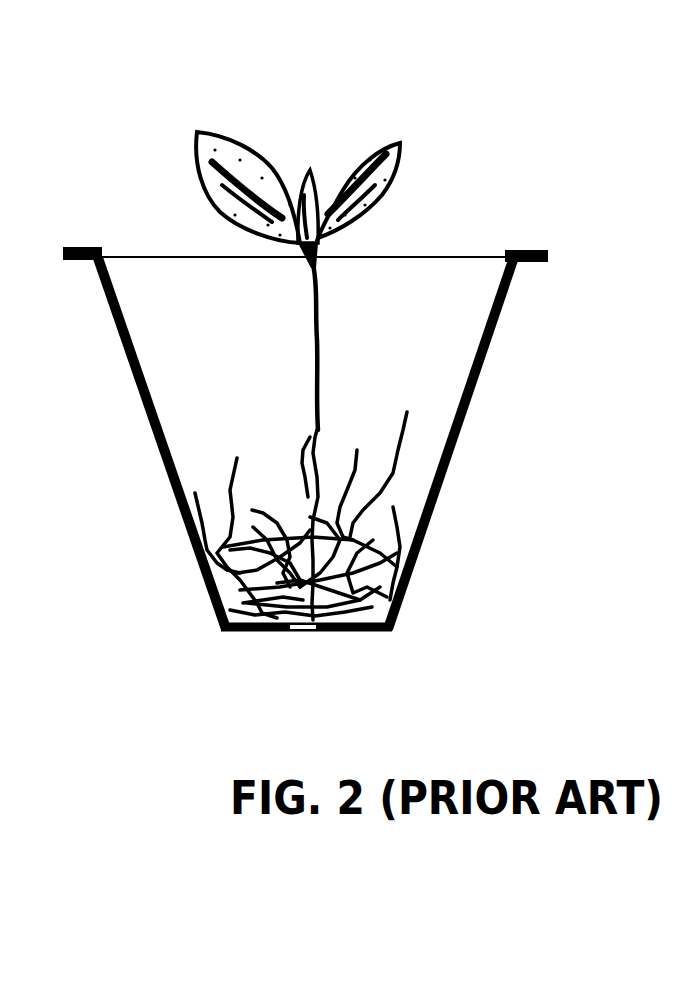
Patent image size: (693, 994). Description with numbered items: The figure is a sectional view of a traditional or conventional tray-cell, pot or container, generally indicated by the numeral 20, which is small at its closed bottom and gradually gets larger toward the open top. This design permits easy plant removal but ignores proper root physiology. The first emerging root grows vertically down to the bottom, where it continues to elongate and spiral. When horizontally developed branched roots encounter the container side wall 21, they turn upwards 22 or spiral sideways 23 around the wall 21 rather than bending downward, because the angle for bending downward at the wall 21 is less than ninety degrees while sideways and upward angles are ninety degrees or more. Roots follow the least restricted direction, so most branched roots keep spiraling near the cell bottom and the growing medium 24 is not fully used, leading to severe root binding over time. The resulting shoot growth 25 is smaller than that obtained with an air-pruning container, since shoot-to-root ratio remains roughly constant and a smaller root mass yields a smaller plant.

The conventional tray-cell/pot/container 20 is at (477, 124).
The container side wall 21 is at (420, 522).
The upward-turning roots 22 is at (393, 473).
The sideways spiraling roots 23 is at (365, 585).
The growing medium 24 is at (393, 315).
The shoot growth 25 is at (253, 147).